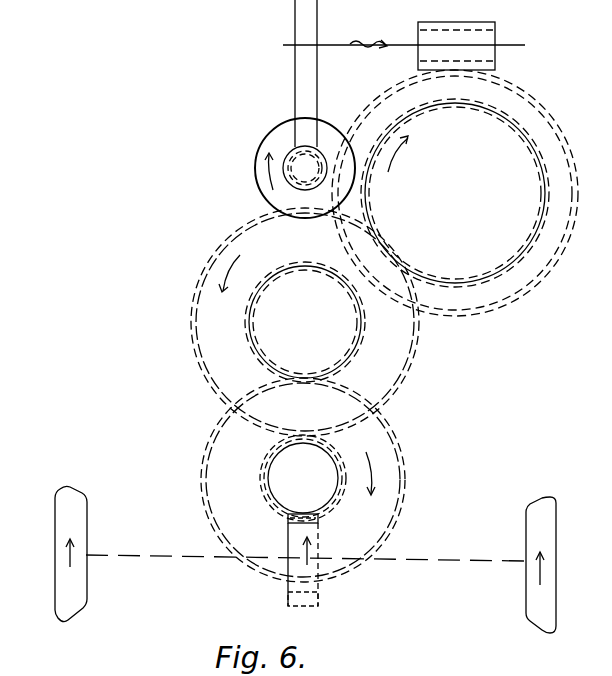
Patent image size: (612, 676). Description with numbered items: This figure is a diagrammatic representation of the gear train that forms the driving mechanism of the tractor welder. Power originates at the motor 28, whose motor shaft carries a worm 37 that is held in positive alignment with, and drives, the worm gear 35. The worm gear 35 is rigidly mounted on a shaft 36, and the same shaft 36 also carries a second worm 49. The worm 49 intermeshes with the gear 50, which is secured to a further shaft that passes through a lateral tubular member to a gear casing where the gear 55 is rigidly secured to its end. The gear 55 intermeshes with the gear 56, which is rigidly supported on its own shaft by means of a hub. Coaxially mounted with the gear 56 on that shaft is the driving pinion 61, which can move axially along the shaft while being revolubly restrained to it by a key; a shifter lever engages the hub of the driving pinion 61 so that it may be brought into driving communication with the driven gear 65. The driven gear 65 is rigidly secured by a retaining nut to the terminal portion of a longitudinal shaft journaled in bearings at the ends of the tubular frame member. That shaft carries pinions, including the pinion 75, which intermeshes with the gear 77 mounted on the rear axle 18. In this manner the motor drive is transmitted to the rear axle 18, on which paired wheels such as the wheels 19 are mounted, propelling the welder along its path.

The rear axle 18 is at (443, 562).
The paired wheels 19 is at (60, 513).
The motor 28 is at (273, 136).
The worm gear 35 is at (300, 14).
The shaft 36 is at (396, 42).
The worm 37 is at (290, 174).
The worm 49 is at (470, 38).
The gear 50 is at (556, 112).
The gear 55 is at (541, 183).
The gear 56 is at (408, 360).
The driving pinion 61 is at (359, 334).
The driven gear 65 is at (398, 444).
The pinion 75 is at (338, 496).
The gear 77 is at (320, 592).